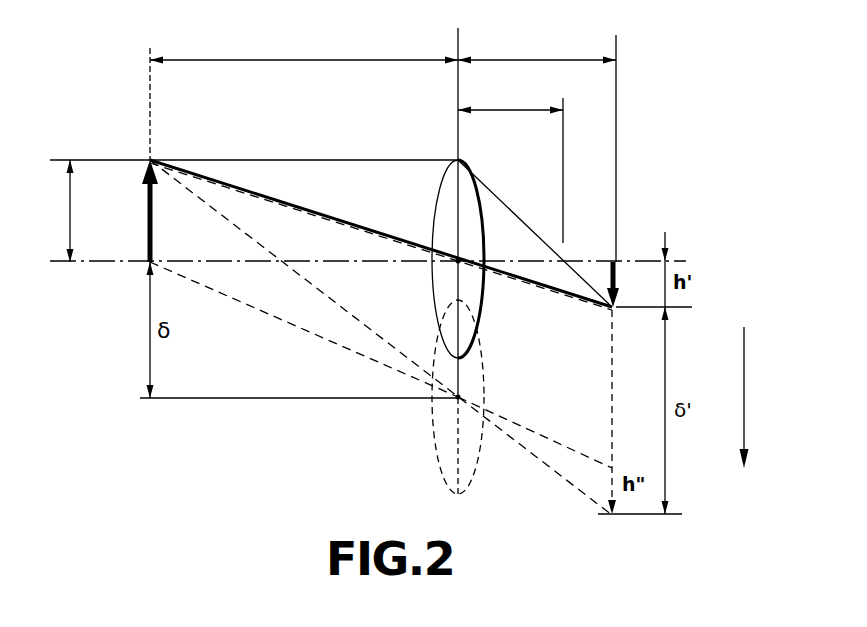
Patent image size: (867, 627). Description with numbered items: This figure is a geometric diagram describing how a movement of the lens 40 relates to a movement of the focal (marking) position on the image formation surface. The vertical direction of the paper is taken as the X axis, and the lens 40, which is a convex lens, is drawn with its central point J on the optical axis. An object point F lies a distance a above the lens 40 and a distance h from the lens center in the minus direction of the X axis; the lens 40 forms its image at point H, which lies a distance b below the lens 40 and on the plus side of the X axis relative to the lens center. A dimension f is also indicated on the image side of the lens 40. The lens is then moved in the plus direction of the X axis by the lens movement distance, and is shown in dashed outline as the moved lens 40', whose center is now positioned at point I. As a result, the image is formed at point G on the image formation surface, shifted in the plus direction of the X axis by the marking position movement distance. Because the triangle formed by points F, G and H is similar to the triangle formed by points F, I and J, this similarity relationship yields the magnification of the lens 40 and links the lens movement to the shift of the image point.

The lens 40 is at (487, 249).
The shifted lens 40' is at (480, 406).
The object point F is at (152, 160).
The image point H is at (628, 313).
The lens central point J is at (456, 258).
The moved lens center point I is at (455, 400).
The shifted image point G is at (612, 518).
The X axis X is at (754, 397).
The object distance a is at (304, 48).
The image distance b is at (537, 48).
The focal length f is at (510, 97).
The object height h is at (62, 211).